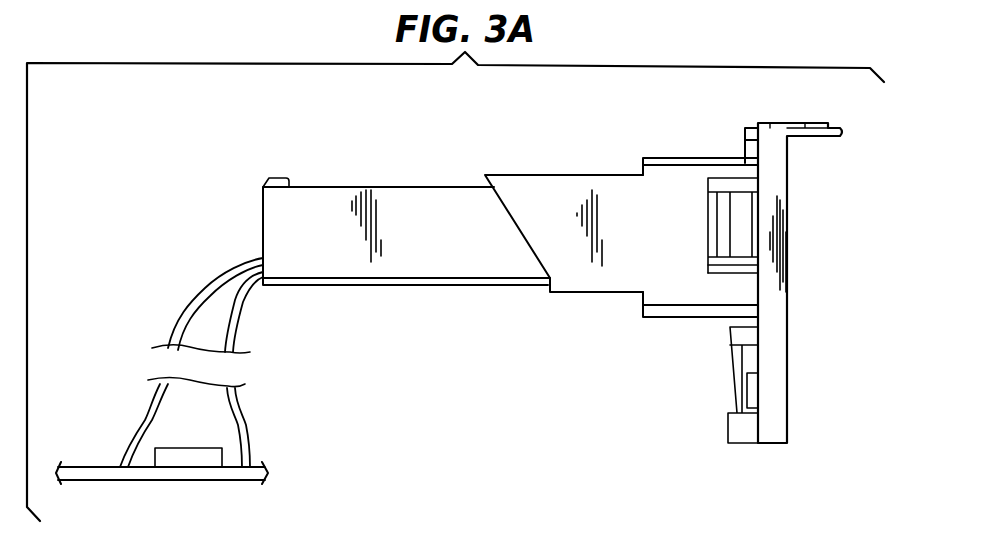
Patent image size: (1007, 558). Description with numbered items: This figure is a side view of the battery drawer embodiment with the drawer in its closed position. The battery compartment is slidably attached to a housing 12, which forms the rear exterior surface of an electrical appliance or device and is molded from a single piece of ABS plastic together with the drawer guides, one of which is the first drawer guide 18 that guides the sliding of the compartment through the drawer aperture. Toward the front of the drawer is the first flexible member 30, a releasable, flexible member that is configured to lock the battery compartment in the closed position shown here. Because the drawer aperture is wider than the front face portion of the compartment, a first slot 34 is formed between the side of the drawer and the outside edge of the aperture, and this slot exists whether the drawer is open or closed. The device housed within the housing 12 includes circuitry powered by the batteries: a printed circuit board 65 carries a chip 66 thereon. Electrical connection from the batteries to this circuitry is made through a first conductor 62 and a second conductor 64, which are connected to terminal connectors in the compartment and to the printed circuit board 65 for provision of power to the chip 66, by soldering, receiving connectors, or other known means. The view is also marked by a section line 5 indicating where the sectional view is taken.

The section line 5- 5 is at (263, 232).
The housing 12 is at (814, 390).
The first drawer guide 18 is at (572, 294).
The first flexible member 30 is at (740, 226).
The first slot 34 is at (718, 270).
The first conductor 62 is at (237, 320).
The second conductor 64 is at (168, 311).
The printed circuit board 65 is at (150, 478).
The chip 66 is at (202, 462).